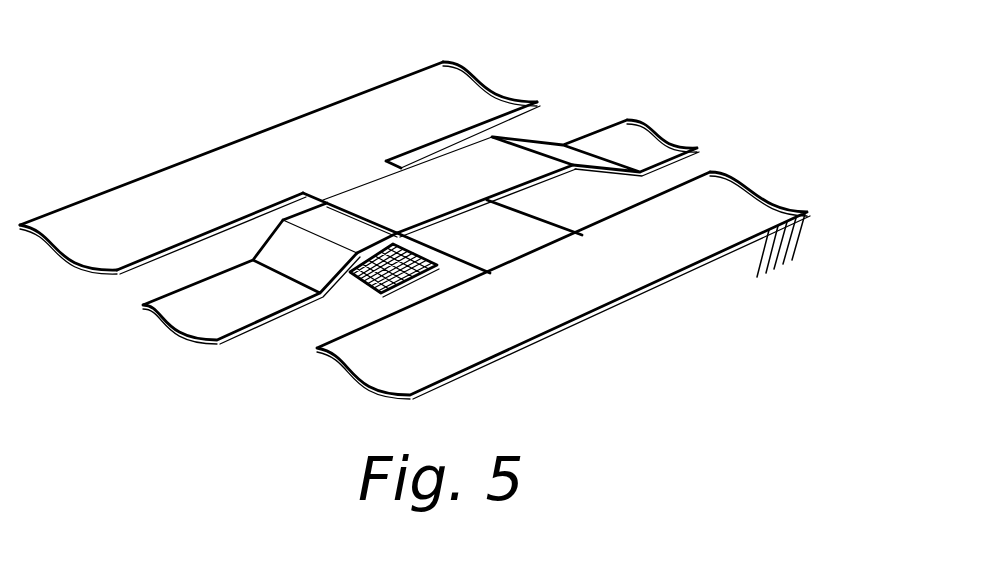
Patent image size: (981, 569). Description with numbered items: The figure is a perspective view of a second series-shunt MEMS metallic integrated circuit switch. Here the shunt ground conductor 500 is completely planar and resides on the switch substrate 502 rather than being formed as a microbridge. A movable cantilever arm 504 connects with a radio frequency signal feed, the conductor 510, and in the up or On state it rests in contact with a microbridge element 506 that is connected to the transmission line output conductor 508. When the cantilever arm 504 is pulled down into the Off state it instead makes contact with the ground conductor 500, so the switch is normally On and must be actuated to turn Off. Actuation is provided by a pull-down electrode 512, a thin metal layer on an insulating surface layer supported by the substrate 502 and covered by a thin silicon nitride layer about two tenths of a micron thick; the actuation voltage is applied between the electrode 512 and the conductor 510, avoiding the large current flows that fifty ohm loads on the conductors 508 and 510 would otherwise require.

The ground conductor 500 is at (498, 237).
The switch substrate 502 is at (800, 238).
The movable cantilever arm 504 is at (346, 229).
The microbridge element 506 is at (453, 172).
The transmission line output conductor 508 is at (623, 143).
The radio frequency signal feed conductor 510 is at (243, 295).
The pull-down electrode 512 is at (422, 274).